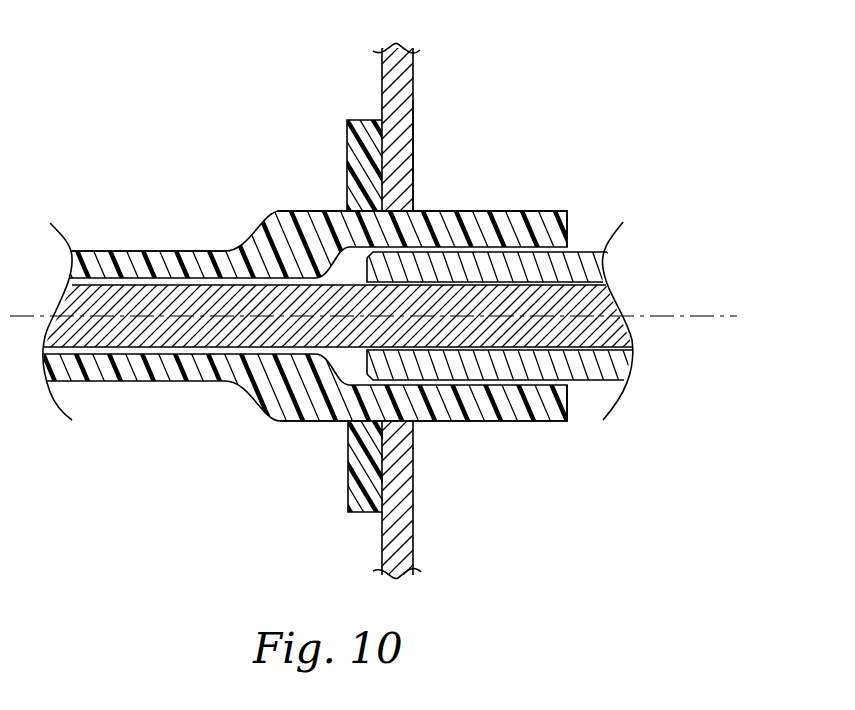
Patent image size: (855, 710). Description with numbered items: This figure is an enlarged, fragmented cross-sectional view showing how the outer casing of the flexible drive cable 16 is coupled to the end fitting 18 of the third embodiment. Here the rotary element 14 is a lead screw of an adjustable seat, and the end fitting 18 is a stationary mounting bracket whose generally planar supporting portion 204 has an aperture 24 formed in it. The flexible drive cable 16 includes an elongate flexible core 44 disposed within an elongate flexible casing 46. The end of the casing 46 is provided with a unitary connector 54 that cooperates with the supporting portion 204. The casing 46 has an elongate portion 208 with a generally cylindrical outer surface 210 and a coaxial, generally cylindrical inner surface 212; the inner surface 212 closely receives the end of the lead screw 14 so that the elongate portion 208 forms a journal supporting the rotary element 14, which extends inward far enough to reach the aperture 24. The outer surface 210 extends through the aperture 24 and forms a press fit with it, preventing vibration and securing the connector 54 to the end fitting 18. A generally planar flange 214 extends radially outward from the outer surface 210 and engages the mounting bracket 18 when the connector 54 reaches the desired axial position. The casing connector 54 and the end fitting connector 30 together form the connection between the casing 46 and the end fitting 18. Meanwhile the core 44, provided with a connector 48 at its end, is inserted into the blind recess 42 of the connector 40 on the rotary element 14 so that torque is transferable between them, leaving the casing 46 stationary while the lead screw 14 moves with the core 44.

The rotary element 14 is at (544, 212).
The flexible drive cable 16 is at (108, 250).
The end fitting 18 is at (414, 97).
The aperture 24 is at (404, 416).
The connector of the end fitting 30 is at (414, 181).
The connector 40 is at (626, 336).
The blind recess 42 is at (630, 316).
The core 44 is at (152, 352).
The casing 46 is at (181, 251).
The connector of the core 48 is at (590, 262).
The unitary connector 54 is at (474, 211).
The supporting portion 204 is at (414, 66).
The elongate portion 208 is at (523, 211).
The outer surface 210 is at (535, 421).
The inner surface 212 is at (560, 372).
The flange 214 is at (347, 145).